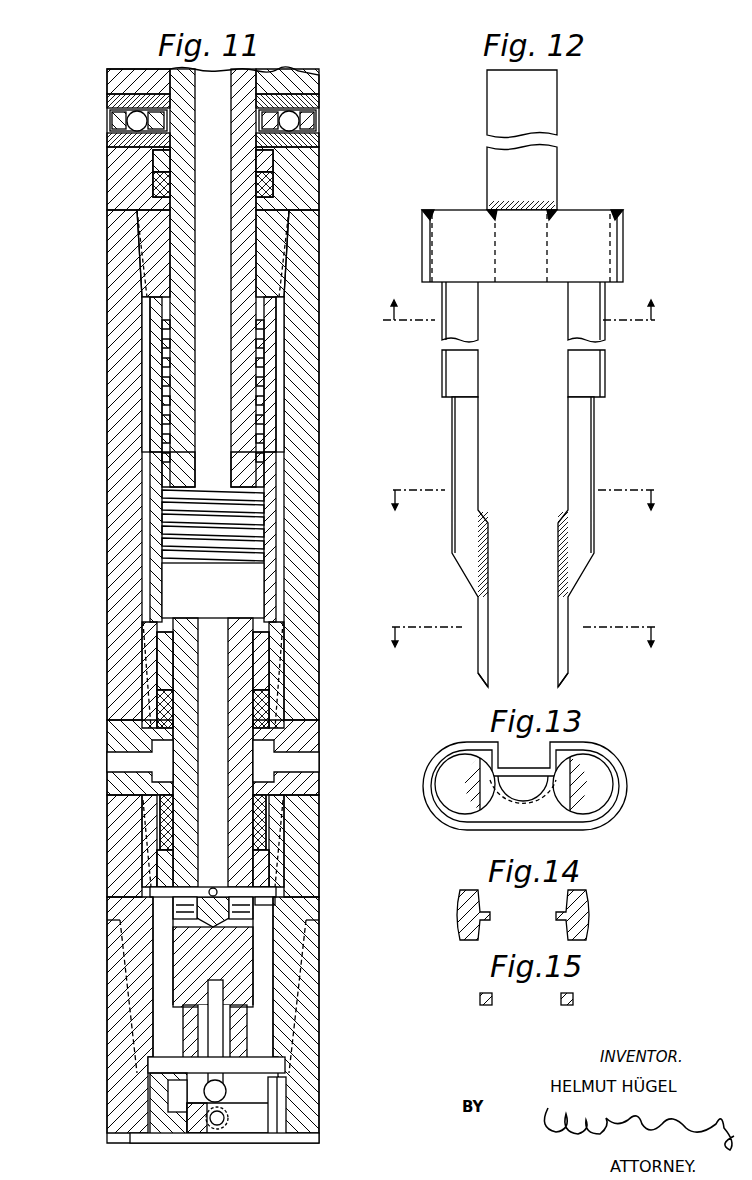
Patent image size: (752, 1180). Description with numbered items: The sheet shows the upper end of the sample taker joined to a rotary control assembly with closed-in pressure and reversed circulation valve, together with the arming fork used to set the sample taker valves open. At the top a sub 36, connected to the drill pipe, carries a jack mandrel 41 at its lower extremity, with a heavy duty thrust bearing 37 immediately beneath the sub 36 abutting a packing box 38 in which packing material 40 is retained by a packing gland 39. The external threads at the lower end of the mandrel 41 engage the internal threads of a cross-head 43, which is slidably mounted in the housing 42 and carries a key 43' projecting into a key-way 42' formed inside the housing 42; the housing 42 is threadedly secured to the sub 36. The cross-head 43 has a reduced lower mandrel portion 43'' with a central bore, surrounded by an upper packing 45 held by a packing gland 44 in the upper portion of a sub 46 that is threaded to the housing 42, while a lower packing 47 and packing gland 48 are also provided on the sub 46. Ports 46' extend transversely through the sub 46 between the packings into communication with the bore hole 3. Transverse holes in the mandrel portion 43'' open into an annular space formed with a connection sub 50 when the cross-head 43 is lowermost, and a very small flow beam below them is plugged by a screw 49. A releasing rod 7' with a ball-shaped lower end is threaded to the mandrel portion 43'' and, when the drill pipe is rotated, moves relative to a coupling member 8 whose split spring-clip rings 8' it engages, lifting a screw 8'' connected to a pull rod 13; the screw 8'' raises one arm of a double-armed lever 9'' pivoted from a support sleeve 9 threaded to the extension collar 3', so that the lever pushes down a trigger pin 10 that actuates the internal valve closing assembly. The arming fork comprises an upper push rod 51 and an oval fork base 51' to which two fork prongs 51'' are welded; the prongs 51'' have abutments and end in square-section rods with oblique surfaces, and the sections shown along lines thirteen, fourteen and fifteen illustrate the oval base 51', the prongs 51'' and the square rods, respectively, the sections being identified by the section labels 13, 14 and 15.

In FIG. 11, the sub 36 is at (118, 82).
In FIG. 11, the heavy duty thrust bearing 37 is at (120, 122).
In FIG. 11, the packing box 38 is at (122, 162).
In FIG. 11, the packing gland 39 is at (155, 165).
In FIG. 11, the packing material 40 is at (158, 185).
In FIG. 11, the jack mandrel 41 is at (162, 308).
In FIG. 11, the housing 42 is at (184, 465).
In FIG. 11, the key-way 42' is at (166, 374).
In FIG. 11, the cross-head 43 is at (162, 537).
In FIG. 11, the key 43' is at (156, 590).
In FIG. 11, the reduced lower mandrel portion 43'' is at (151, 750).
In FIG. 11, the packing gland 44 is at (160, 680).
In FIG. 11, the upper packing 45 is at (158, 712).
In FIG. 11, the sub 46 is at (184, 757).
In FIG. 11, the ports 46' is at (184, 761).
In FIG. 11, the lower packing 47 is at (160, 825).
In FIG. 11, the packing gland 48 is at (158, 868).
In FIG. 11, the screw 49 is at (175, 910).
In FIG. 11, the connection sub 50 is at (148, 968).
In FIG. 11, the bore hole 3 is at (237, 1015).
In FIG. 11, the extension collar 3' is at (245, 996).
In FIG. 11, the releasing rod 7' is at (152, 1032).
In FIG. 11, the coupling member 8 is at (255, 1065).
In FIG. 11, the split spring-clip rings 8' is at (289, 1041).
In FIG. 11, the screw 8'' is at (122, 1104).
In FIG. 11, the support sleeve 9 is at (168, 1125).
In FIG. 11, the double-armed lever 9'' is at (323, 1107).
In FIG. 11, the trigger pin 10 is at (290, 1138).
In FIG. 12, the upper push rod 51 is at (554, 140).
In FIG. 12, the oval fork base 51' is at (546, 246).
In FIG. 13, the oval fork base 51' is at (546, 777).
In FIG. 12, the fork prongs 51'' is at (553, 373).
In FIG. 14, the fork prongs 51'' is at (563, 912).
In FIG. 12, the valve pull rod 13 is at (524, 326).
In FIG. 12, the section line 14- 14 is at (521, 485).
In FIG. 12, the section line 15- 15 is at (527, 622).